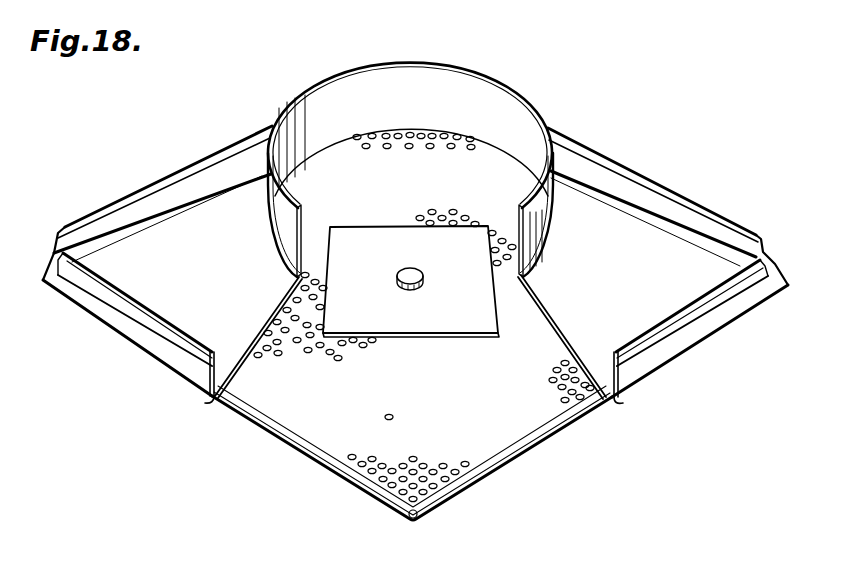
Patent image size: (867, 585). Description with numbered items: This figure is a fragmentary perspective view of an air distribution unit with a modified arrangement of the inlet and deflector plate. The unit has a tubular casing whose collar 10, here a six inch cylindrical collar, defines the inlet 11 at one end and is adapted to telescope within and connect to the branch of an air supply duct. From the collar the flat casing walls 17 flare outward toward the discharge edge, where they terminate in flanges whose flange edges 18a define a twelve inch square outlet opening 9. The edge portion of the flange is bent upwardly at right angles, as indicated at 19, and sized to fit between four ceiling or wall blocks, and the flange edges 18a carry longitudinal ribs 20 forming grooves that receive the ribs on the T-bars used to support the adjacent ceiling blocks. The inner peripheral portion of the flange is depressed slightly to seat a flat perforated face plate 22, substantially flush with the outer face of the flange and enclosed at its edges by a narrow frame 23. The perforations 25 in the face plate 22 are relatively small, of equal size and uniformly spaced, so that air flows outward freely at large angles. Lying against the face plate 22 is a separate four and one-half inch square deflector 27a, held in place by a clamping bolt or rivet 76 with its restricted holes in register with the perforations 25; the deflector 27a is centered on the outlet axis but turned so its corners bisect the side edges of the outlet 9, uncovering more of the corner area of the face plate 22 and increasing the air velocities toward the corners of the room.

The outlet opening 9 is at (549, 408).
The collar 10 is at (300, 112).
The inlet 11 is at (406, 84).
The casing walls 17 is at (542, 305).
The flange edges 18a is at (212, 352).
The upwardly bent flange edge portion 19 is at (207, 403).
The longitudinal ribs 20 is at (613, 367).
The face plate 22 is at (251, 391).
The frame 23 is at (483, 474).
The perforations 25 is at (276, 345).
The deflector 27a is at (390, 318).
The clamping bolt or rivet 76 is at (422, 273).